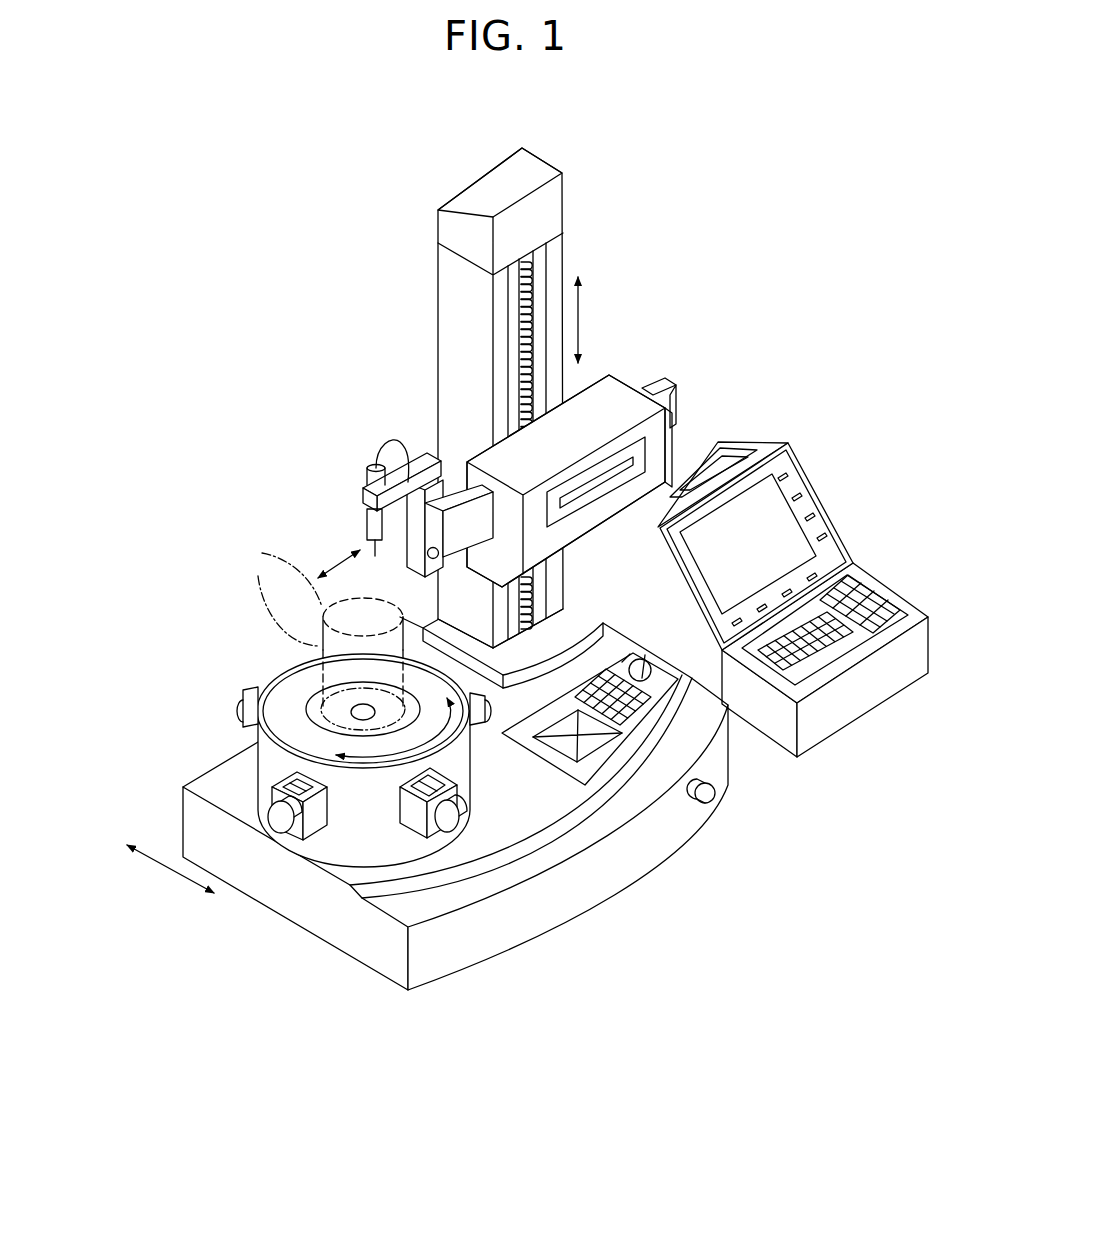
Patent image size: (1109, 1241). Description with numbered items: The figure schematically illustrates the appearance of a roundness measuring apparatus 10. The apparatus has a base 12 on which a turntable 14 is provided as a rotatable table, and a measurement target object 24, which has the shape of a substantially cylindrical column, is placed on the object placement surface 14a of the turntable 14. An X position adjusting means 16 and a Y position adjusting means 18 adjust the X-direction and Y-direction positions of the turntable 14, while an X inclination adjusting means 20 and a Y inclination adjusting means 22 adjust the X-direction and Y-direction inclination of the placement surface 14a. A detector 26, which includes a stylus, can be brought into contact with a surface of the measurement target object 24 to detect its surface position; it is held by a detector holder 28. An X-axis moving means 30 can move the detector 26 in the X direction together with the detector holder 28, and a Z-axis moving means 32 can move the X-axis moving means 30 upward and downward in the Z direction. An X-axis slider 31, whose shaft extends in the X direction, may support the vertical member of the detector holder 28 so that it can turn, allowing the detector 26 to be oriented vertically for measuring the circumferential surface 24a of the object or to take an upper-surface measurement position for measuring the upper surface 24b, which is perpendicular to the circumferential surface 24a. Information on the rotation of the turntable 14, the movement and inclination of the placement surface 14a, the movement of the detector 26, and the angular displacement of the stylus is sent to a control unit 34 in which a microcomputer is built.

The roundness measuring apparatus 10 is at (647, 146).
The base 12 is at (473, 947).
The turntable 14 is at (268, 758).
The object placement surface 14a is at (305, 688).
The X position adjusting means 16 is at (478, 722).
The Y position adjusting means 18 is at (247, 697).
The X inclination adjusting means 20 is at (282, 822).
The Y inclination adjusting means 22 is at (458, 822).
The measurement target object 24 is at (236, 527).
The circumferential surface 24a is at (261, 598).
The upper surface 24b is at (283, 564).
The detector 26 is at (371, 522).
The detector holder 28 is at (390, 440).
The X-axis moving means 30 is at (645, 386).
The X-axis slider 31 is at (676, 382).
The Z-axis moving means 32 is at (450, 316).
The control unit 34 is at (820, 497).